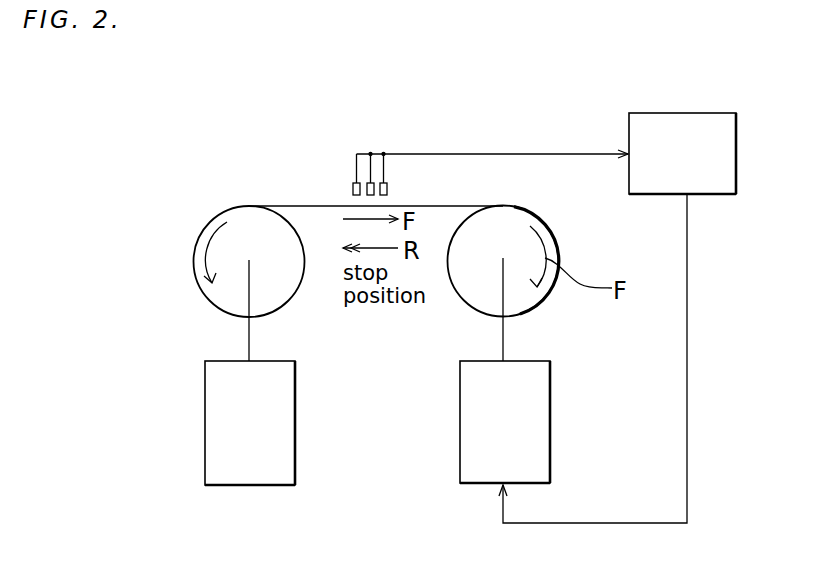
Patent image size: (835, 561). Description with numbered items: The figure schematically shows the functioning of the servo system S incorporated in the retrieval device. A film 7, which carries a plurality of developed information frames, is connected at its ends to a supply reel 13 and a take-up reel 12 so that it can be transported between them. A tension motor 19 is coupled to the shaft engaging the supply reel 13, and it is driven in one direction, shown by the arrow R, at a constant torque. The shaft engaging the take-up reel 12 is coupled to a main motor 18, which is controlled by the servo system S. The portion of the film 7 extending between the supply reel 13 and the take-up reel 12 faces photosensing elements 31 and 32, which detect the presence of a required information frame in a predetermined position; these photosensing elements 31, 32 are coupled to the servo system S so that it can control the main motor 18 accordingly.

The film 7 is at (457, 205).
The take-up reel 12 is at (555, 235).
The supply reel 13 is at (295, 292).
The main motor 18 is at (540, 452).
The tension motor 19 is at (283, 435).
The photosensing element 31 is at (392, 188).
The photosensing element 32 is at (352, 188).
The servo system S is at (723, 194).